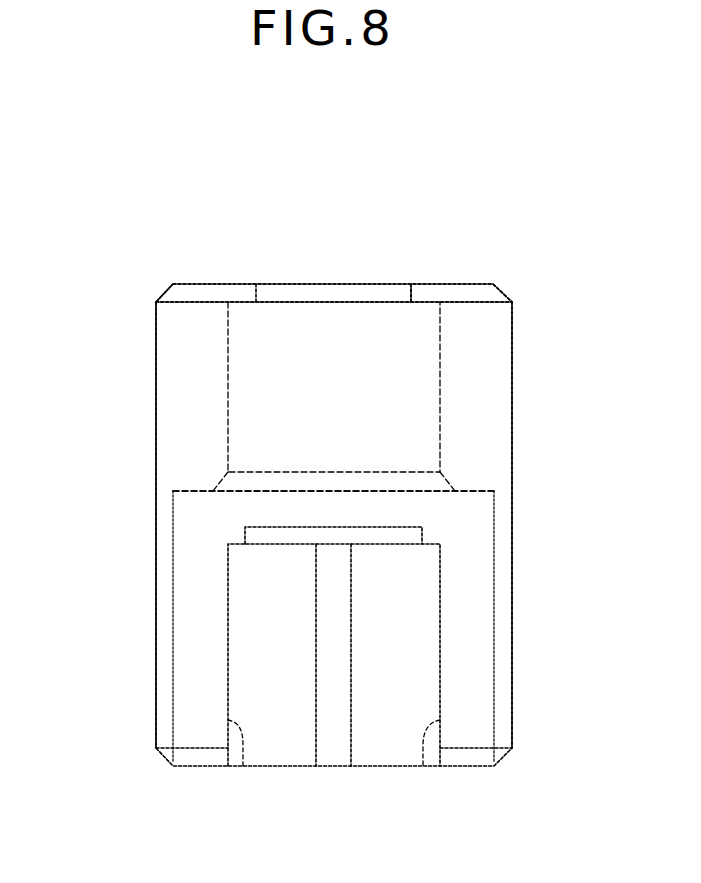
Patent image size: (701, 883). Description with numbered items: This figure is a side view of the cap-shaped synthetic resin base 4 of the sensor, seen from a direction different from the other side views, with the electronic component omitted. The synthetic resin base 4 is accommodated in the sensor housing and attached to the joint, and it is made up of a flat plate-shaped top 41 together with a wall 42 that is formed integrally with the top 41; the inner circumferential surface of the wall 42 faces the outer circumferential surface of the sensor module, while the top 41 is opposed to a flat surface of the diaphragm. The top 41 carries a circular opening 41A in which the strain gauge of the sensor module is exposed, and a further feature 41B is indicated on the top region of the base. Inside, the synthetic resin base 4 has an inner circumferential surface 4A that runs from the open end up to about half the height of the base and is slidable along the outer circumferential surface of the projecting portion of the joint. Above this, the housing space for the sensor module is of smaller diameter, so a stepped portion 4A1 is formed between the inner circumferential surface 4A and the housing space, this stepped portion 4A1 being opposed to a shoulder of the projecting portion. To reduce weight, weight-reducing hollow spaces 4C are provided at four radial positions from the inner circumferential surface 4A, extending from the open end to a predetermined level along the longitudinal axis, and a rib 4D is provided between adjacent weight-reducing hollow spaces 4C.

The synthetic resin base 4 is at (510, 213).
The top 41 is at (304, 284).
The opening 41A is at (410, 297).
The inner wall of housing 41B is at (243, 397).
The wall 42 is at (490, 393).
The inner circumferential surface 4A is at (178, 648).
The stepped portion 4A1 is at (196, 498).
The weight-reducing hollow space 4C is at (243, 766).
The rib 4D is at (335, 637).